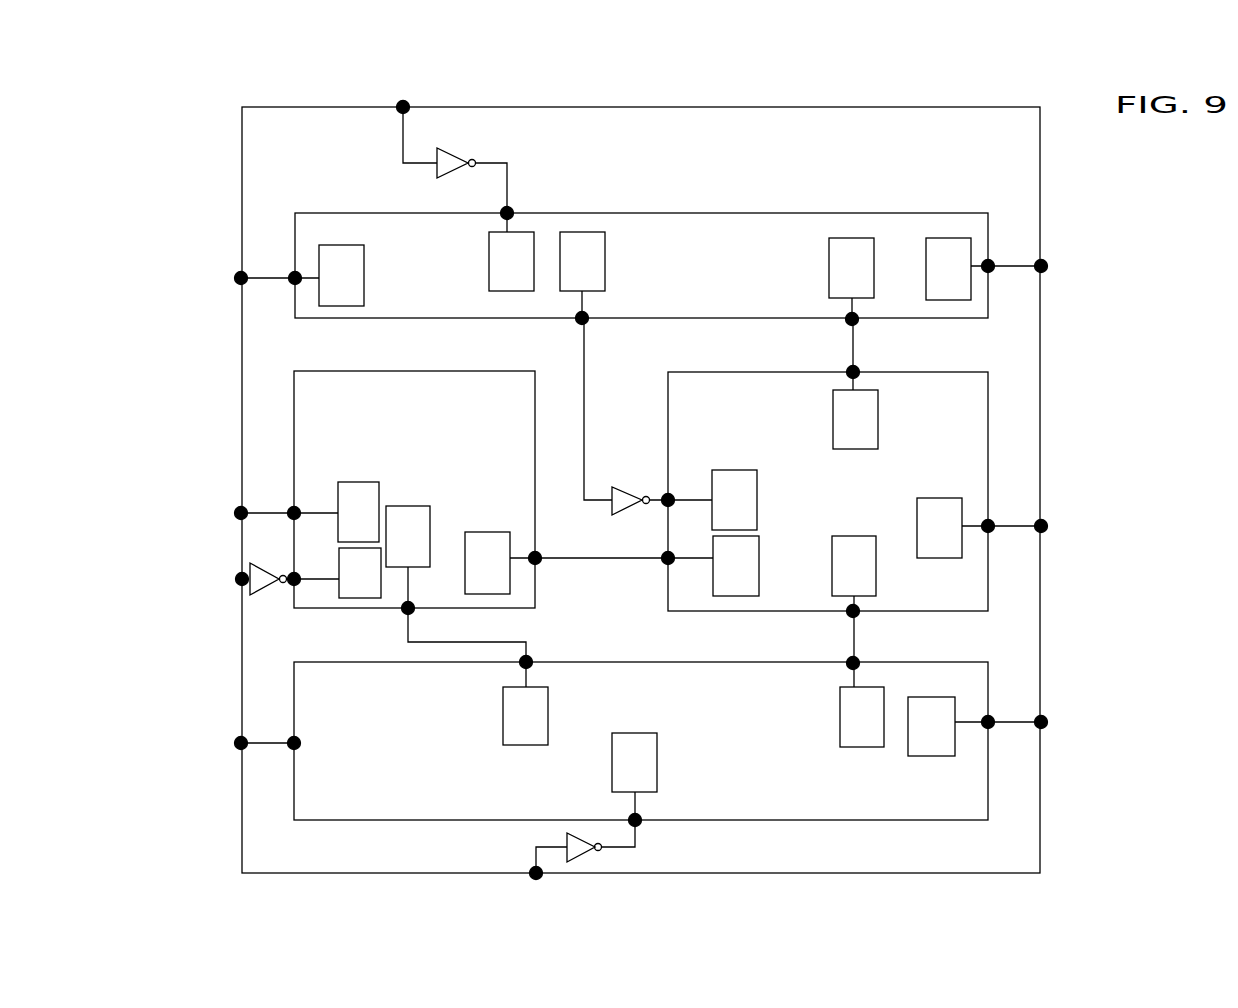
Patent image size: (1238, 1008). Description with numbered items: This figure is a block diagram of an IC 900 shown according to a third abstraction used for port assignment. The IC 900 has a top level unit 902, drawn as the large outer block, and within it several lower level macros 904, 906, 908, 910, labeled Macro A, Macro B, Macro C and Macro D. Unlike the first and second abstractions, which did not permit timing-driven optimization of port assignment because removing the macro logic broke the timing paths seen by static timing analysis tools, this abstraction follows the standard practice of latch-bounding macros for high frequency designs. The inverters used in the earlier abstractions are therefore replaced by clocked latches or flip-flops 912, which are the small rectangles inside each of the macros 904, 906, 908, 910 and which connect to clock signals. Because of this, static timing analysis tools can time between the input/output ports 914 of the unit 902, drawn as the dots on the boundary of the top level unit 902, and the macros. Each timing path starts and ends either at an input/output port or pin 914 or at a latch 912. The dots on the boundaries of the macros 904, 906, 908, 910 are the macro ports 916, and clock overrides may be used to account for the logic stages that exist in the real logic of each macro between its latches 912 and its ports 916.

The IC 900 is at (130, 126).
The top level unit 902 is at (795, 118).
The lower level macro 904 is at (726, 225).
The lower level macro 906 is at (435, 385).
The lower level macro 908 is at (943, 383).
The lower level macro 910 is at (650, 678).
The clocked latch or flip-flop 912 is at (350, 248).
The unit input/output port 914 is at (412, 102).
The macro port 916 is at (507, 213).